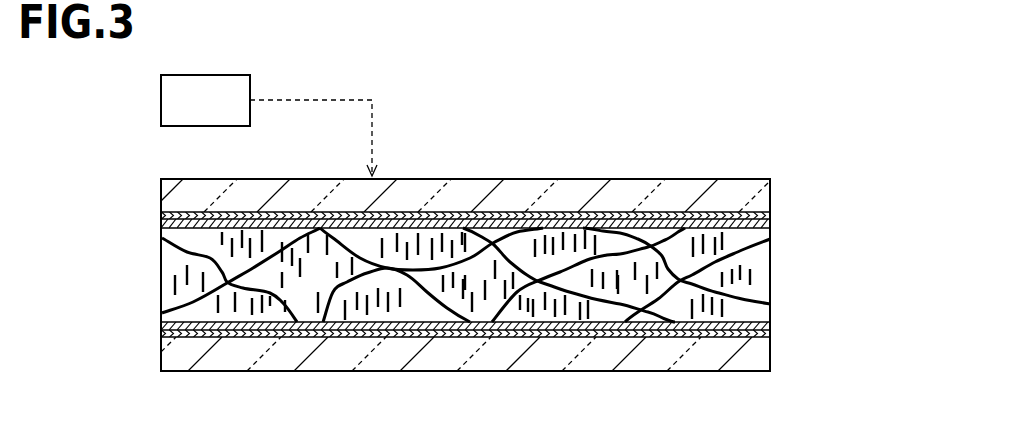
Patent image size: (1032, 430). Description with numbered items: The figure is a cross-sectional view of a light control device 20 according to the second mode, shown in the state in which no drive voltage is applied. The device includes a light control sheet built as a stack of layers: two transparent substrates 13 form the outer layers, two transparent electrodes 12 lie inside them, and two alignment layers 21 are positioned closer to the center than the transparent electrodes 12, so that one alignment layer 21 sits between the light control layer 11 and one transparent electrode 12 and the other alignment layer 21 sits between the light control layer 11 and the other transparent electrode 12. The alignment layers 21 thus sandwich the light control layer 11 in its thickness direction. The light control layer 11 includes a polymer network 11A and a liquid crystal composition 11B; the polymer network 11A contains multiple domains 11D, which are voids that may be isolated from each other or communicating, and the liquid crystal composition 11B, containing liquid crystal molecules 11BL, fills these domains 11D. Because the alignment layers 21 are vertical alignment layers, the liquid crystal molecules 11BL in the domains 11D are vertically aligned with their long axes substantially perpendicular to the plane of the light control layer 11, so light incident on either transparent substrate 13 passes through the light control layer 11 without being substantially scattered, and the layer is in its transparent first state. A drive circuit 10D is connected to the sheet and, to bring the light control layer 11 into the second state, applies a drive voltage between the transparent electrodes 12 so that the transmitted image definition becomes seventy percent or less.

The light control device 20 is at (870, 167).
The drive circuit 10D is at (161, 100).
The transparent substrate 13 is at (770, 197).
The transparent electrode 12 is at (161, 216).
The alignment layer 21 is at (770, 221).
The light control layer 11 is at (161, 283).
The polymer network 11A is at (293, 238).
The liquid crystal composition 11B is at (517, 312).
The domain 11D is at (283, 302).
The liquid crystal molecule 11BL is at (605, 239).